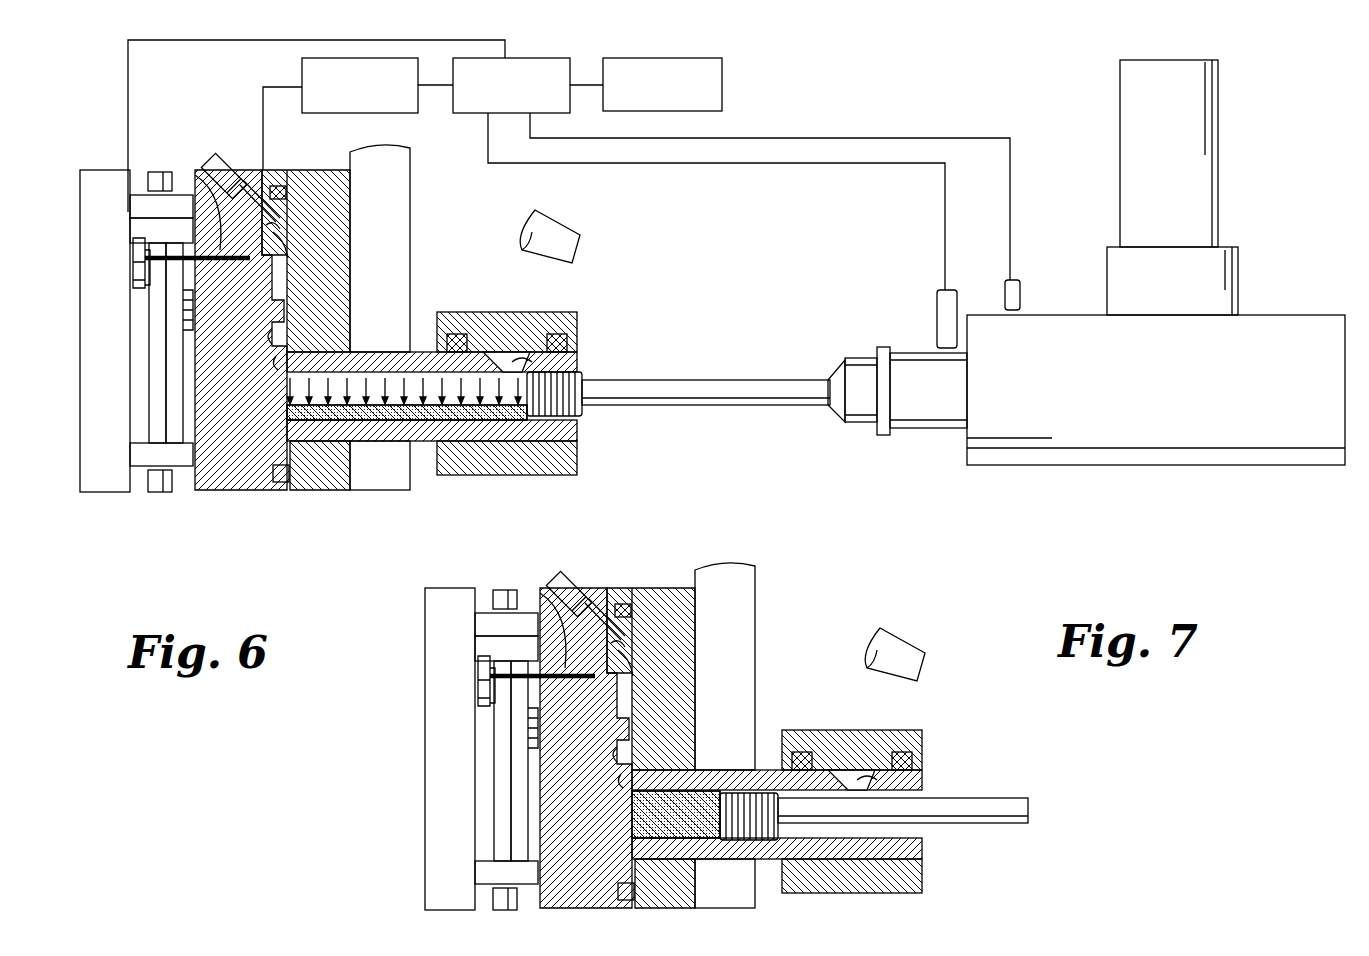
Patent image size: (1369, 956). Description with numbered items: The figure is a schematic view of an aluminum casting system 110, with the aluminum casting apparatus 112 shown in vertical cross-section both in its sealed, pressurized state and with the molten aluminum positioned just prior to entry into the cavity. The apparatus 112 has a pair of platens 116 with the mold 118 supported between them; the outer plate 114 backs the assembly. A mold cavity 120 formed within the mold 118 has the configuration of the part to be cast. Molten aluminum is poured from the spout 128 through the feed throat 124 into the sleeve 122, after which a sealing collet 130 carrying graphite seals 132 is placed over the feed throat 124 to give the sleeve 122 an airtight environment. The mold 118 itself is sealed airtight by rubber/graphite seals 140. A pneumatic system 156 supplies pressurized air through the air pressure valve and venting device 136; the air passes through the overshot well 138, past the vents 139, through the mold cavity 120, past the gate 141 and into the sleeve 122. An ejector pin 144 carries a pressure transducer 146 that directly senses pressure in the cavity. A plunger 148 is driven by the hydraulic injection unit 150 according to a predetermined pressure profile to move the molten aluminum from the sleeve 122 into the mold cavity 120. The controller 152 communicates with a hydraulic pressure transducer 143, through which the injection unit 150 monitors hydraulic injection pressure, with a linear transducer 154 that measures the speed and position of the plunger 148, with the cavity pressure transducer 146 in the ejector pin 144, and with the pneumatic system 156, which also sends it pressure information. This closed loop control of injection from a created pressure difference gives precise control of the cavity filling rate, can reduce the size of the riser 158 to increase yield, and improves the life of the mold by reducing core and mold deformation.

In FIG. 6, the aluminum casting system 110 is at (800, 130).
In FIG. 6, the aluminum casting apparatus 112 is at (188, 510).
In FIG. 7, the aluminum casting apparatus 112 is at (433, 750).
In FIG. 6, the platen 114 is at (98, 460).
In FIG. 7, the platen 114 is at (412, 749).
In FIG. 6, the platen 116 is at (410, 184).
In FIG. 7, the platen 116 is at (753, 735).
In FIG. 6, the mold 118 is at (337, 168).
In FIG. 7, the mold 118 is at (651, 725).
In FIG. 6, the mold cavity 120 is at (264, 344).
In FIG. 7, the mold cavity 120 is at (586, 748).
In FIG. 6, the sleeve 122 is at (380, 350).
In FIG. 7, the sleeve 122 is at (777, 769).
In FIG. 6, the feed throat 124 is at (570, 358).
In FIG. 7, the feed throat 124 is at (858, 793).
In FIG. 6, the spout 128 is at (525, 218).
In FIG. 7, the spout 128 is at (869, 654).
In FIG. 6, the sealing collet 130 is at (555, 312).
In FIG. 7, the sealing collet 130 is at (879, 786).
In FIG. 6, the graphite seals 132 is at (466, 345).
In FIG. 7, the graphite seals 132 is at (894, 724).
In FIG. 6, the air pressure valve and venting device 136 is at (224, 154).
In FIG. 7, the air pressure valve and venting device 136 is at (585, 578).
In FIG. 6, the overshot well 138 is at (284, 238).
In FIG. 7, the overshot well 138 is at (647, 652).
In FIG. 6, the vents 139 is at (290, 262).
In FIG. 7, the vents 139 is at (650, 679).
In FIG. 6, the rubber/graphite seals 140 is at (287, 194).
In FIG. 7, the rubber/graphite seals 140 is at (623, 748).
In FIG. 6, the gate 141 is at (258, 370).
In FIG. 7, the gate 141 is at (584, 773).
In FIG. 6, the hydraulic pressure transducer 143 is at (1040, 265).
In FIG. 6, the ejector pin 144 is at (127, 240).
In FIG. 7, the ejector pin 144 is at (533, 596).
In FIG. 6, the pressure transducer 146 is at (196, 172).
In FIG. 7, the pressure transducer 146 is at (544, 605).
In FIG. 6, the plunger 148 is at (715, 378).
In FIG. 7, the plunger 148 is at (948, 782).
In FIG. 6, the hydraulic injection unit 150 is at (1137, 466).
In FIG. 6, the controller 152 is at (473, 113).
In FIG. 6, the linear transducer 154 is at (932, 298).
In FIG. 6, the pneumatic system 156 is at (302, 68).
In FIG. 6, the riser 158 is at (262, 398).
In FIG. 7, the riser 158 is at (587, 801).